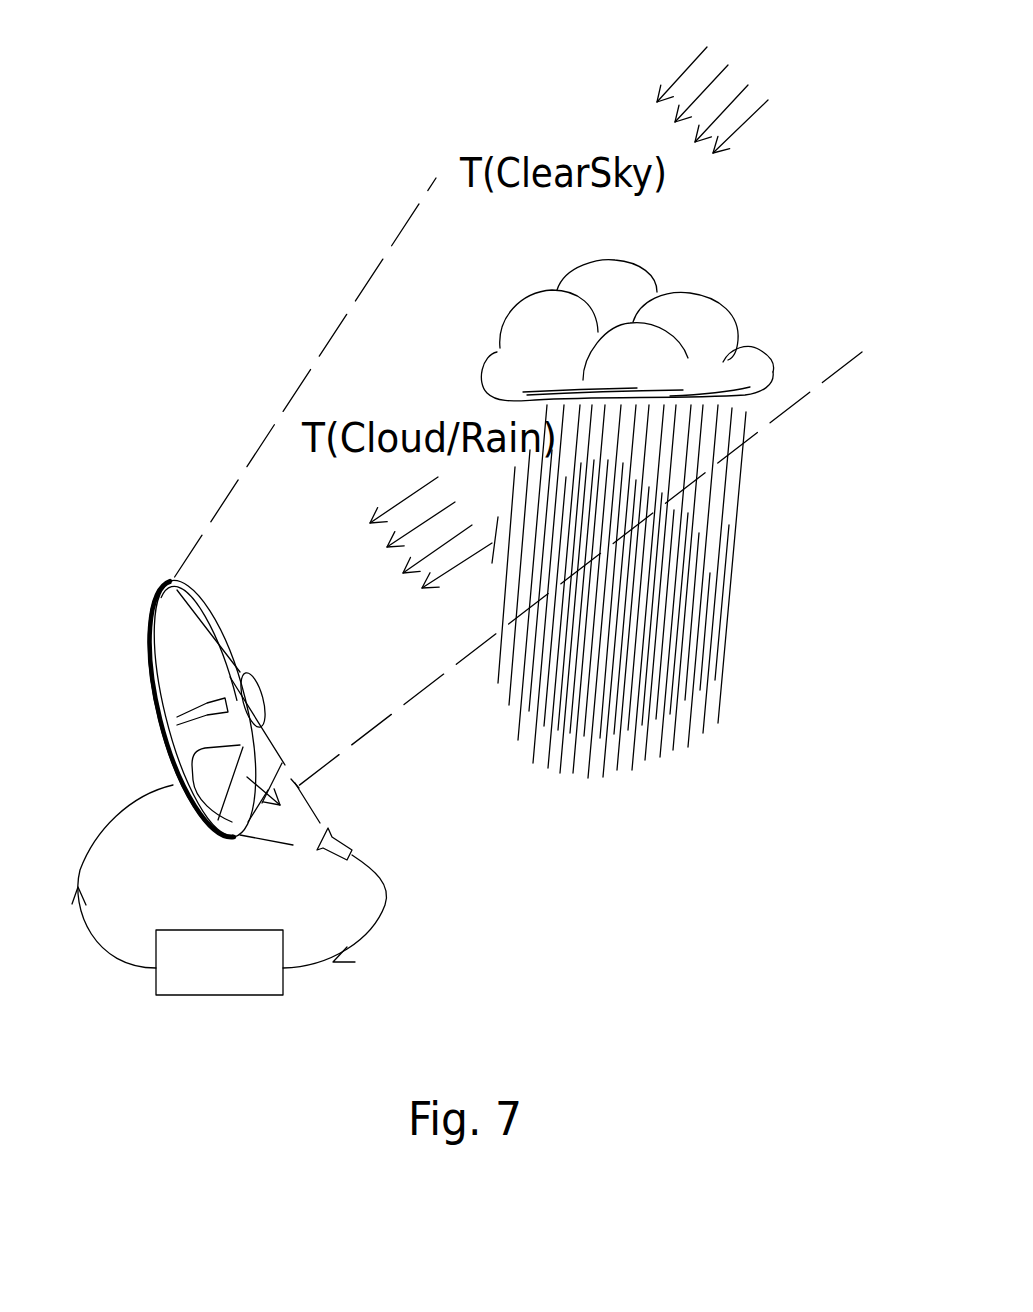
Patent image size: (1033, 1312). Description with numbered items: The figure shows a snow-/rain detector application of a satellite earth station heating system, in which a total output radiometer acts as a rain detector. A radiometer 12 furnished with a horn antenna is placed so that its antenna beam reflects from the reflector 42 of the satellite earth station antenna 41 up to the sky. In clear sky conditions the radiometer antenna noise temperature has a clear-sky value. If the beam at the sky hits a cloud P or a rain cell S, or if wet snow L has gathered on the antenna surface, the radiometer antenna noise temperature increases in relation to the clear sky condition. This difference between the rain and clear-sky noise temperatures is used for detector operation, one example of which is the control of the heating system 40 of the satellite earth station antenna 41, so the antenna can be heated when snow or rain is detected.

The radiometer 12 is at (345, 830).
The heating system 40 is at (250, 953).
The satellite earth station antenna 41 is at (150, 700).
The reflector 42 is at (180, 658).
The wet snow L is at (270, 767).
The cloud P is at (688, 328).
The rain cell S is at (700, 592).